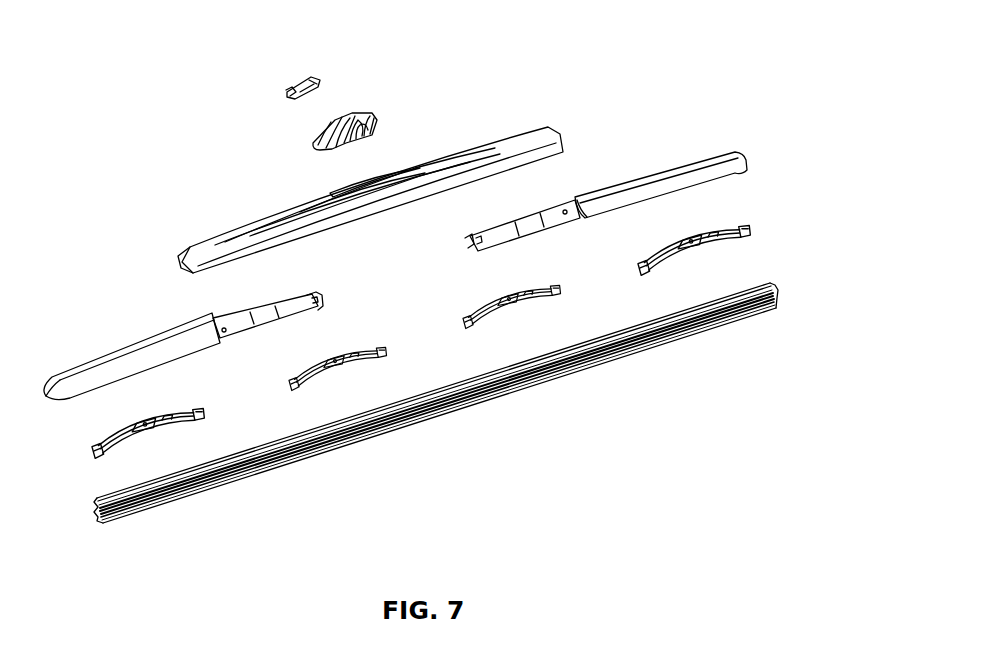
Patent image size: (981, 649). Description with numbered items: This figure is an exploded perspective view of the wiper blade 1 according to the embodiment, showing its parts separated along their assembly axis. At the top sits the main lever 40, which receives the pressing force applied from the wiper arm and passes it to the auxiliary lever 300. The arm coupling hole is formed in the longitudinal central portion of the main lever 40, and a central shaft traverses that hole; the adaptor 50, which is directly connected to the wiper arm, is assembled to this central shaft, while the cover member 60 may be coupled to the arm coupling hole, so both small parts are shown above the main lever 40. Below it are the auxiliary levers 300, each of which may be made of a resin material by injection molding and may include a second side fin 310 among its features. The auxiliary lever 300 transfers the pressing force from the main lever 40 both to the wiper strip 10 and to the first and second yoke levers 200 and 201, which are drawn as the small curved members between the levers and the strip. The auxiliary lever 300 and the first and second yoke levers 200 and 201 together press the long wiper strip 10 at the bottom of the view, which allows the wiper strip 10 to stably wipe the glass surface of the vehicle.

The wiper blade assembly 1 is at (643, 42).
The wiper strip 10 is at (435, 413).
The main lever 40 is at (469, 149).
The adaptor 50 is at (358, 110).
The cover member 60 is at (303, 77).
The first yoke lever 200 is at (366, 341).
The second yoke lever 201 is at (84, 455).
The auxiliary lever 300 is at (93, 361).
The second side fin 310 is at (76, 379).